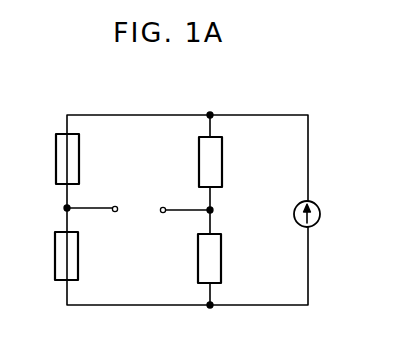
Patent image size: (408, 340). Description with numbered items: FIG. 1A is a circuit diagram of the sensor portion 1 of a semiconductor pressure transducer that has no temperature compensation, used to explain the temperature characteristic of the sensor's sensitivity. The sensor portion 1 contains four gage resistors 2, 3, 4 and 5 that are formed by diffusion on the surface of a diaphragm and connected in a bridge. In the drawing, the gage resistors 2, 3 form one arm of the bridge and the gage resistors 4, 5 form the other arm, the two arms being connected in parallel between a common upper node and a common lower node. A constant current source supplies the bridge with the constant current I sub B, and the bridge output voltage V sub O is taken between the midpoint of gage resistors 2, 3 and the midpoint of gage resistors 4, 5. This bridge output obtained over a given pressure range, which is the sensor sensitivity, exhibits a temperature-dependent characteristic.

The sensor portion 1 is at (199, 210).
The gage resistor 2 is at (79, 159).
The gage resistor 3 is at (78, 258).
The gage resistor 4 is at (193, 258).
The gage resistor 5 is at (199, 161).